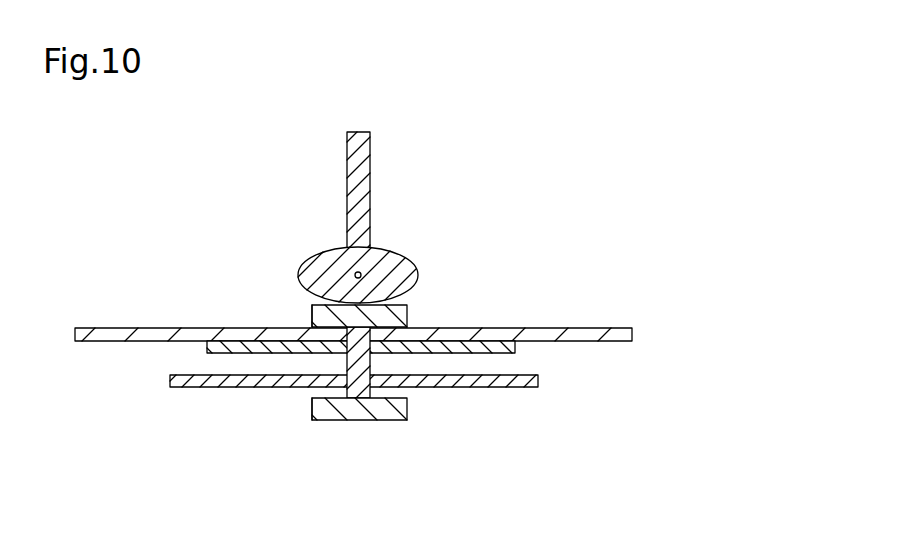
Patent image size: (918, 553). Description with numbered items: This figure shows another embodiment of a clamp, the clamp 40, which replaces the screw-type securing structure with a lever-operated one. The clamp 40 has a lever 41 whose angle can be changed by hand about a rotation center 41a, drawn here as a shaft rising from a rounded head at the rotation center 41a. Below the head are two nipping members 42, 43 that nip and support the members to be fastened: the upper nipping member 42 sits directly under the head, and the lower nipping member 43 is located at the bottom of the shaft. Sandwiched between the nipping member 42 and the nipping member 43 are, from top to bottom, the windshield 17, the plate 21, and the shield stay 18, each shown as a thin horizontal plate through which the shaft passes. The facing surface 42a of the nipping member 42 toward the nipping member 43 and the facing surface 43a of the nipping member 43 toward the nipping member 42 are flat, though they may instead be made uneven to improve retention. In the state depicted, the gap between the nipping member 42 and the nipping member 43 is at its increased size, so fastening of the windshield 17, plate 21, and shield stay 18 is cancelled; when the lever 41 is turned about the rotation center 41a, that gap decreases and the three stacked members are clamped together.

The clamp 40 is at (343, 320).
The lever 41 is at (369, 182).
The rotation center 41a is at (362, 275).
The nipping member 42 is at (397, 313).
The facing surface 42a is at (315, 315).
The nipping member 43 is at (407, 420).
The facing surface 43a is at (330, 410).
The windshield 17 is at (631, 328).
The plate 21 is at (513, 341).
The shield stay 18 is at (538, 381).